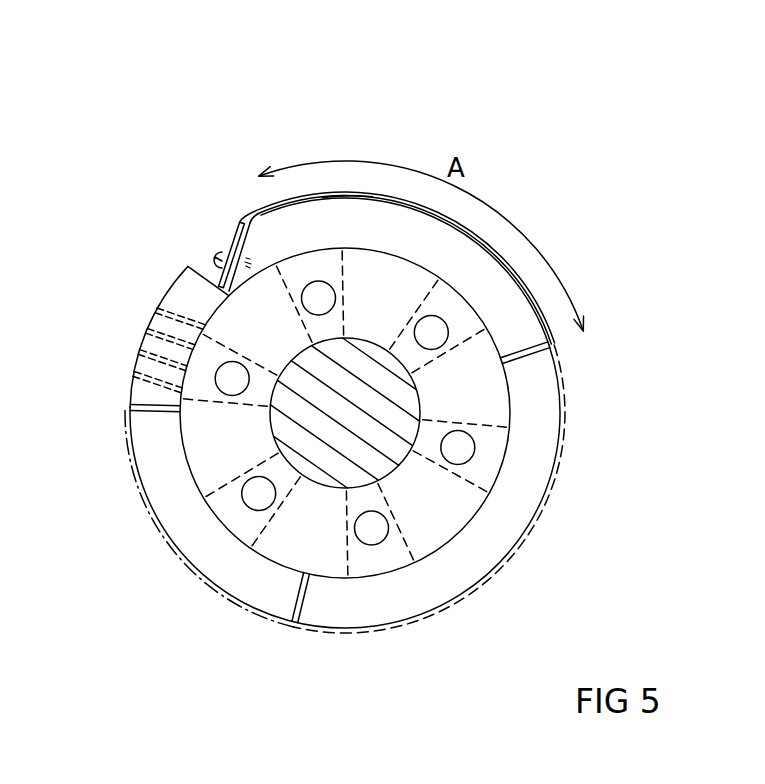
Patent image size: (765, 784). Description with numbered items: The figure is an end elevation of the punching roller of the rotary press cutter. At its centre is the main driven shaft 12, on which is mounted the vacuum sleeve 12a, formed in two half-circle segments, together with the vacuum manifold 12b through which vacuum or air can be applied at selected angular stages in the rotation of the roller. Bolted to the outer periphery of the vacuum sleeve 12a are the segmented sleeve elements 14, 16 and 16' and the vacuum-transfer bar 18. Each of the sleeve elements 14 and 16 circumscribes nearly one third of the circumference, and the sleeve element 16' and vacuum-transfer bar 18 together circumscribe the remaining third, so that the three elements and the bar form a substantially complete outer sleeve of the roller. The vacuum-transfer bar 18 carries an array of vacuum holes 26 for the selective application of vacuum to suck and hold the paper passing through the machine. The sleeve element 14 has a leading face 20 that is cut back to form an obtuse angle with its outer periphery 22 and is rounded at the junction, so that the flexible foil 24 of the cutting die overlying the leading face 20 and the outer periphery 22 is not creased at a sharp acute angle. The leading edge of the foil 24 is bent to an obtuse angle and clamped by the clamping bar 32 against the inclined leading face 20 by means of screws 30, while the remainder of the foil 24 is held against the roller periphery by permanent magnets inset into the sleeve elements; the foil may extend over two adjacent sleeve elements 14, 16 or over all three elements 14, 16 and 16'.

The main driven shaft 12 is at (405, 411).
The vacuum sleeve 12a is at (433, 518).
The vacuum manifold 12b is at (257, 497).
The segmented sleeve element 14 is at (465, 277).
The segmented sleeve element 16 is at (437, 485).
The segmented sleeve element 16' is at (345, 555).
The vacuum-transfer bar 18 is at (124, 361).
The leading face 20 is at (220, 290).
The outer periphery 22 is at (268, 205).
The flexible foil 24 is at (340, 188).
The vacuum holes 26 is at (143, 335).
The screws 30 is at (220, 258).
The clamping bar 32 is at (238, 225).